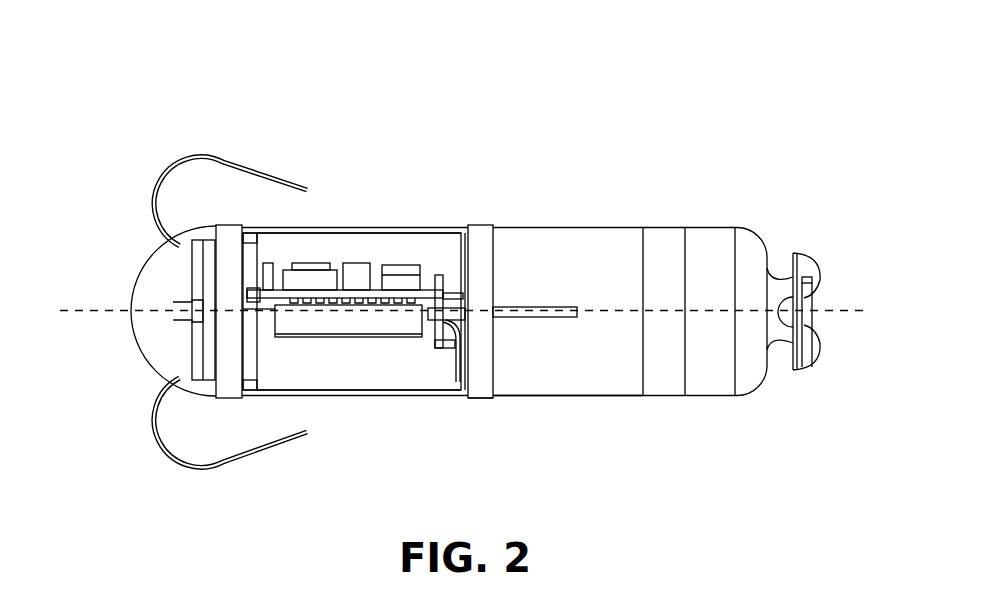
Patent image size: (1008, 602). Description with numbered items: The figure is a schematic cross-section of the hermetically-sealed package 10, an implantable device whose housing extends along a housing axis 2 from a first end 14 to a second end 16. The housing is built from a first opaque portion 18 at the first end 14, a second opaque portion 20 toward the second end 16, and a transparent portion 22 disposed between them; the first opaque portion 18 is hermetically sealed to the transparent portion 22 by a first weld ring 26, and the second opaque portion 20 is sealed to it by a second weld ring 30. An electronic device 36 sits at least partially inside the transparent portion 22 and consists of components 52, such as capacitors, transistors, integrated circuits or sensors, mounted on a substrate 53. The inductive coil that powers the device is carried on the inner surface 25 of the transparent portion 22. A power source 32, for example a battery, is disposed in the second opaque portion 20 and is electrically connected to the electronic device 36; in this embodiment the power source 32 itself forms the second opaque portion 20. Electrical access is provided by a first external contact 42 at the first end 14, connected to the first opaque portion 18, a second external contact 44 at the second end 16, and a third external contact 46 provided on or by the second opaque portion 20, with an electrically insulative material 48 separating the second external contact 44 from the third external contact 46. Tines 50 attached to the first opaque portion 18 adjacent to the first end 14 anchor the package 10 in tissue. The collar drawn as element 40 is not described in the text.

The housing axis 2 is at (73, 308).
The hermetically-sealed package 10 is at (578, 138).
The first end 14 is at (101, 343).
The second end 16 is at (792, 240).
The first opaque portion 18 is at (147, 263).
The second opaque portion 20 is at (576, 227).
The transparent portion 22 is at (401, 210).
The inner surface 25 is at (345, 392).
The first weld ring 26 is at (230, 398).
The second weld ring 30 is at (468, 398).
The power source 32 is at (571, 286).
The electronic device 36 is at (349, 226).
The collar 40 is at (535, 228).
The first external contact 42 is at (150, 368).
The second external contact 44 is at (710, 388).
The third external contact 46 is at (547, 380).
The electrically insulative material 48 is at (653, 390).
The tines 50 is at (232, 157).
The components 52 is at (309, 275).
The substrate 53 is at (422, 272).